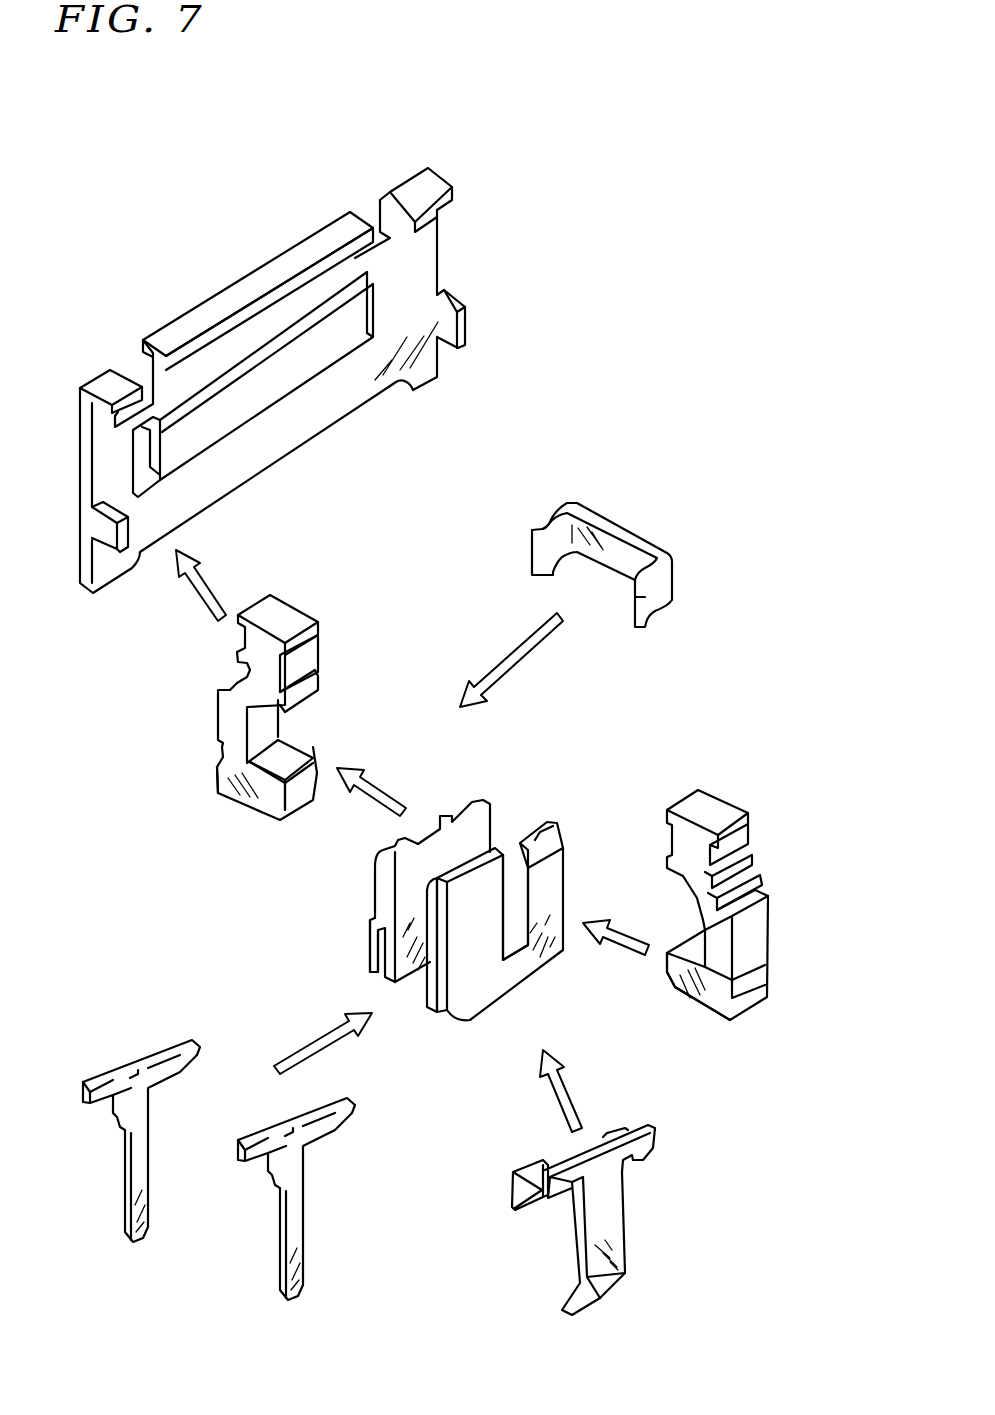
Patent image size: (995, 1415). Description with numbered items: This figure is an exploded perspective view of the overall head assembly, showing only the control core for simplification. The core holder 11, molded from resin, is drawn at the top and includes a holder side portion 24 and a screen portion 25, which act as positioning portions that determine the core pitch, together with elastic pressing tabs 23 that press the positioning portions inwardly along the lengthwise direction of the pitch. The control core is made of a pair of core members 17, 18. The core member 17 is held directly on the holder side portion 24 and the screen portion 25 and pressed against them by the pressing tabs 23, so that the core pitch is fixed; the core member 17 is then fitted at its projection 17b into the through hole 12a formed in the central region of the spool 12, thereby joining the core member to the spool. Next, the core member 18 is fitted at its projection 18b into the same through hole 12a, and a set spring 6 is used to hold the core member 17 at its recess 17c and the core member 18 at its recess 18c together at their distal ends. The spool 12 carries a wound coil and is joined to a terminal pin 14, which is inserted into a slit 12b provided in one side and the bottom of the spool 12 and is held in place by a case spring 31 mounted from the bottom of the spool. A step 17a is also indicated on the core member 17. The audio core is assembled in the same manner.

The set spring 6 is at (603, 520).
The core holder 11 is at (267, 352).
The spool 12 is at (447, 944).
The through hole 12a is at (503, 918).
The slit 12b is at (377, 977).
The terminal pin 14 is at (283, 1215).
The core member 17 is at (211, 733).
The step of holder block 17a is at (223, 753).
The projection 17b is at (297, 800).
The recess 17c is at (245, 633).
The core member 18 is at (687, 894).
The projection 18b is at (660, 983).
The recess 18c is at (737, 840).
The elastic pressing tab 23 is at (410, 185).
The holder side portion 24 is at (277, 267).
The screen portion 25 is at (270, 392).
The case spring 31 is at (617, 1220).